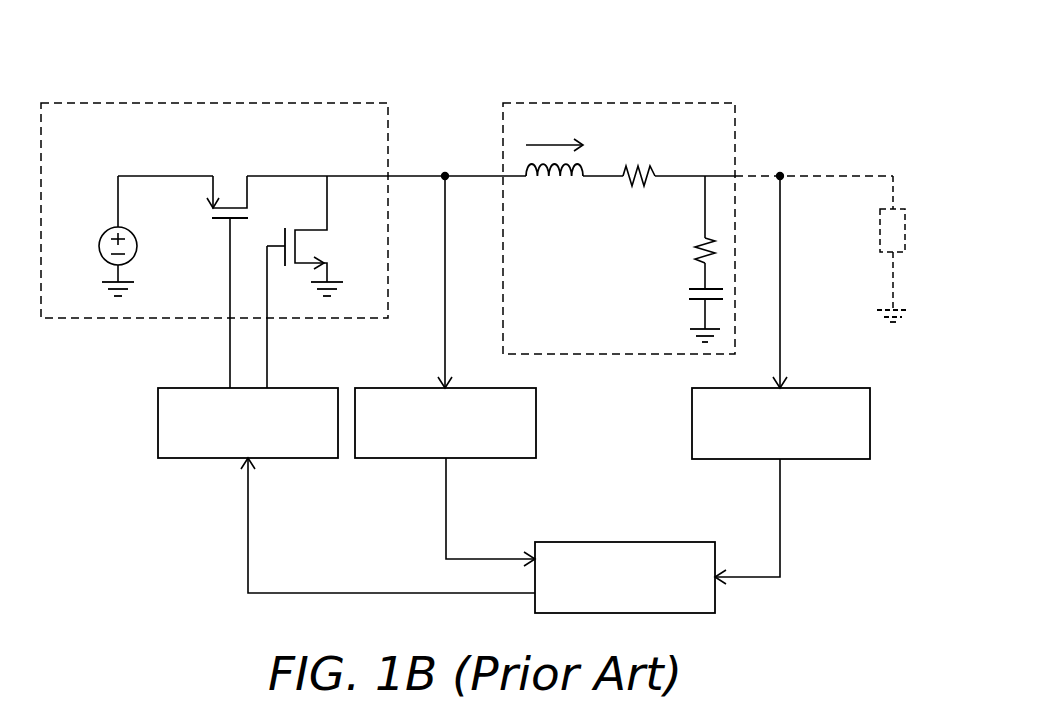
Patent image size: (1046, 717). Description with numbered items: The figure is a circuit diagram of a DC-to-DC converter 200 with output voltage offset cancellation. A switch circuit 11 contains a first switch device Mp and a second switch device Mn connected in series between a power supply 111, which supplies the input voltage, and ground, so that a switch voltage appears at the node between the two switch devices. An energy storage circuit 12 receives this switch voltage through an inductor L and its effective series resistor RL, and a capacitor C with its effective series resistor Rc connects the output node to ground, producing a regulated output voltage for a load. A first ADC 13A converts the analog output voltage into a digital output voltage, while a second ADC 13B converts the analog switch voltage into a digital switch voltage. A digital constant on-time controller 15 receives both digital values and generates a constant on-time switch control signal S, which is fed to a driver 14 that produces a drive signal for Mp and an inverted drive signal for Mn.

The DC-to-DC converter 200 is at (62, 37).
The switch circuit 11 is at (213, 103).
The power supply 111 is at (137, 246).
The energy storage circuit 12 is at (593, 103).
The first ADC 13A is at (830, 388).
The second ADC 13B is at (536, 420).
The driver 14 is at (158, 420).
The digital constant on-time (COT) controller 15 is at (624, 542).